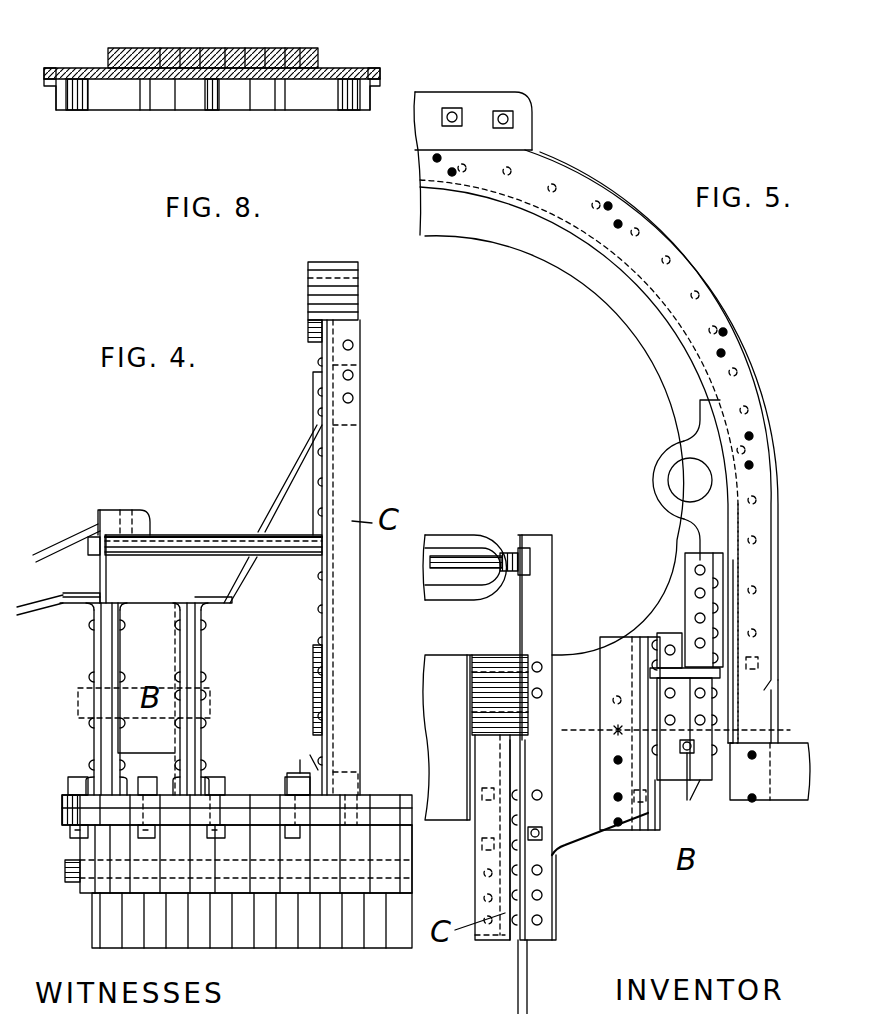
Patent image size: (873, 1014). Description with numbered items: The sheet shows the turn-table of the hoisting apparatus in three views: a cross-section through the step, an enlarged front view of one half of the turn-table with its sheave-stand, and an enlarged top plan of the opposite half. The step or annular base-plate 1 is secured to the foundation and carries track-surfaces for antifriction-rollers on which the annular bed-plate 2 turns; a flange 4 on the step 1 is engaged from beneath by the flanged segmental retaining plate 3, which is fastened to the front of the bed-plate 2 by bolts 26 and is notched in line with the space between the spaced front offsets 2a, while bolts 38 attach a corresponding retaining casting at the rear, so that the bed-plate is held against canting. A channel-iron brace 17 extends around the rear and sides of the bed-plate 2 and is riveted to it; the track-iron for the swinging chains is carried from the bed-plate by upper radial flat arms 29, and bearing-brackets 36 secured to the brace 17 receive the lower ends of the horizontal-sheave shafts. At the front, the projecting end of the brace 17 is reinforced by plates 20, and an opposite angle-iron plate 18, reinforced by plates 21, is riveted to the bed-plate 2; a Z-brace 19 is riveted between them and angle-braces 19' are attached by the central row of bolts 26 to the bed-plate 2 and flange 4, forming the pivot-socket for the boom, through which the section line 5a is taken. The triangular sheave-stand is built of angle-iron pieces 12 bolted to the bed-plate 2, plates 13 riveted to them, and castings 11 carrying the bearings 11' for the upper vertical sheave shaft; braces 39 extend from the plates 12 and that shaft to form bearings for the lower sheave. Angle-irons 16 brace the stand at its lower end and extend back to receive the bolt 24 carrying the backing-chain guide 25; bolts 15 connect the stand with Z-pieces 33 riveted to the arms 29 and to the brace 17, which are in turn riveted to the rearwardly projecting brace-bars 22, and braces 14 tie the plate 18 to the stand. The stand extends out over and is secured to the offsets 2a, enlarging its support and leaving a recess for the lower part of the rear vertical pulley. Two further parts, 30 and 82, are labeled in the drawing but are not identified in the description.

In FIG. 8, the step or annular base-plate 1 is at (315, 80).
In FIG. 4, the step or annular base-plate 1 is at (100, 920).
In FIG. 5, the annular bed-plate 2 is at (430, 100).
In FIG. 4, the annular bed-plate 2 is at (62, 806).
In FIG. 5, the spaced offsets 2a is at (557, 908).
In FIG. 4, the segmental retaining plate 3 is at (385, 845).
In FIG. 8, the flange 4 is at (368, 80).
In FIG. 4, the flange 4 is at (65, 822).
In FIG. 5, the section line 5a is at (693, 734).
In FIG. 5, the plates or castings 11 is at (528, 695).
In FIG. 4, the plates or castings 11 is at (366, 355).
In FIG. 4, the bearings 11' is at (357, 302).
In FIG. 5, the angle-iron pieces 12 is at (490, 822).
In FIG. 4, the angle-iron pieces 12 is at (348, 488).
In FIG. 5, the plates 13 is at (542, 835).
In FIG. 4, the plates 13 is at (326, 503).
In FIG. 4, the braces 14 is at (250, 574).
In FIG. 4, the bolts 15 is at (228, 540).
In FIG. 5, the angle-irons 16 is at (462, 716).
In FIG. 4, the angle-irons 16 is at (312, 760).
In FIG. 5, the channel-iron brace 17 is at (521, 180).
In FIG. 4, the channel-iron brace 17 is at (96, 742).
In FIG. 5, the angle-iron plate 18 is at (605, 758).
In FIG. 4, the angle-iron plate 18 is at (200, 752).
In FIG. 5, the Z-brace 19 is at (689, 610).
In FIG. 4, the Z-brace 19 is at (146, 675).
In FIG. 5, the angle-braces 19' is at (640, 706).
In FIG. 4, the angle-braces 19' is at (124, 761).
In FIG. 5, the reinforcing-plates 20 is at (735, 805).
In FIG. 4, the reinforcing-plates 20 is at (110, 700).
In FIG. 5, the reinforcing plates 21 is at (662, 810).
In FIG. 4, the reinforcing plates 21 is at (185, 700).
In FIG. 4, the brace-bars 22 is at (125, 512).
In FIG. 5, the bolt 24 is at (430, 562).
In FIG. 5, the backing-chain guide 25 is at (440, 540).
In FIG. 5, the bolts 26 is at (486, 852).
In FIG. 4, the bolts 26 is at (70, 835).
In FIG. 5, the upper radial flat metal arms 29 is at (770, 771).
In FIG. 4, the upper radial flat metal arms 29 is at (58, 596).
In FIG. 4, the strut 30 is at (86, 526).
In FIG. 4, the Z-pieces 33 is at (108, 584).
In FIG. 5, the bearing-brackets 36 is at (652, 480).
In FIG. 5, the bolts 38 is at (505, 107).
In FIG. 5, the braces 39 is at (527, 972).
In FIG. 4, the braces 39 is at (313, 690).
In FIG. 4, the rivet holes 82 is at (362, 402).